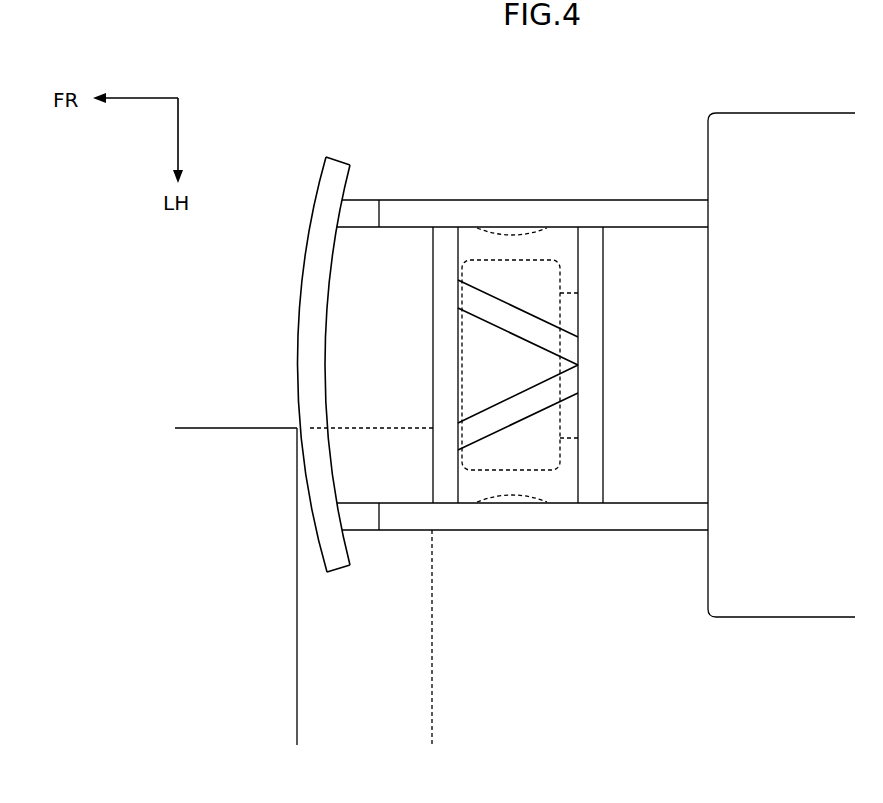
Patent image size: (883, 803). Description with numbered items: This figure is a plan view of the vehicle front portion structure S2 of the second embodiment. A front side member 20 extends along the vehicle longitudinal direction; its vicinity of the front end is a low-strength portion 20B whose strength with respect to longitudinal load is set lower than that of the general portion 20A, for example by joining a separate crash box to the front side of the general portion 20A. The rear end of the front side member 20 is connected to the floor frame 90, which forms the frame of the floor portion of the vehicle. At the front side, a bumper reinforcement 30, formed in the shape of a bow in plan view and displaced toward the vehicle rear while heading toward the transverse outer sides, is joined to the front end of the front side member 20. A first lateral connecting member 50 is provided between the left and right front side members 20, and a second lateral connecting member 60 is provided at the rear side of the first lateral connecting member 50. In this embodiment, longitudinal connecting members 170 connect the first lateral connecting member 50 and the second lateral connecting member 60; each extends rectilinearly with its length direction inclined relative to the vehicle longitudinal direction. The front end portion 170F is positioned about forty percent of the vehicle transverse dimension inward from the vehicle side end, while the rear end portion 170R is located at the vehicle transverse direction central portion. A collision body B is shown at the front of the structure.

The front side member 20 is at (522, 366).
The general portion 20A is at (568, 199).
The low-strength portion 20B is at (361, 208).
The bumper reinforcement 30 is at (288, 366).
The first lateral connecting member 50 is at (432, 370).
The second lateral connecting member 60 is at (605, 360).
The floor frame 90 is at (798, 371).
The longitudinal connecting member 170 is at (566, 365).
The front end portion 170F is at (462, 282).
The rear end portion 170R is at (577, 334).
The vehicle front portion structure S2 is at (620, 131).
The collision body B is at (222, 574).